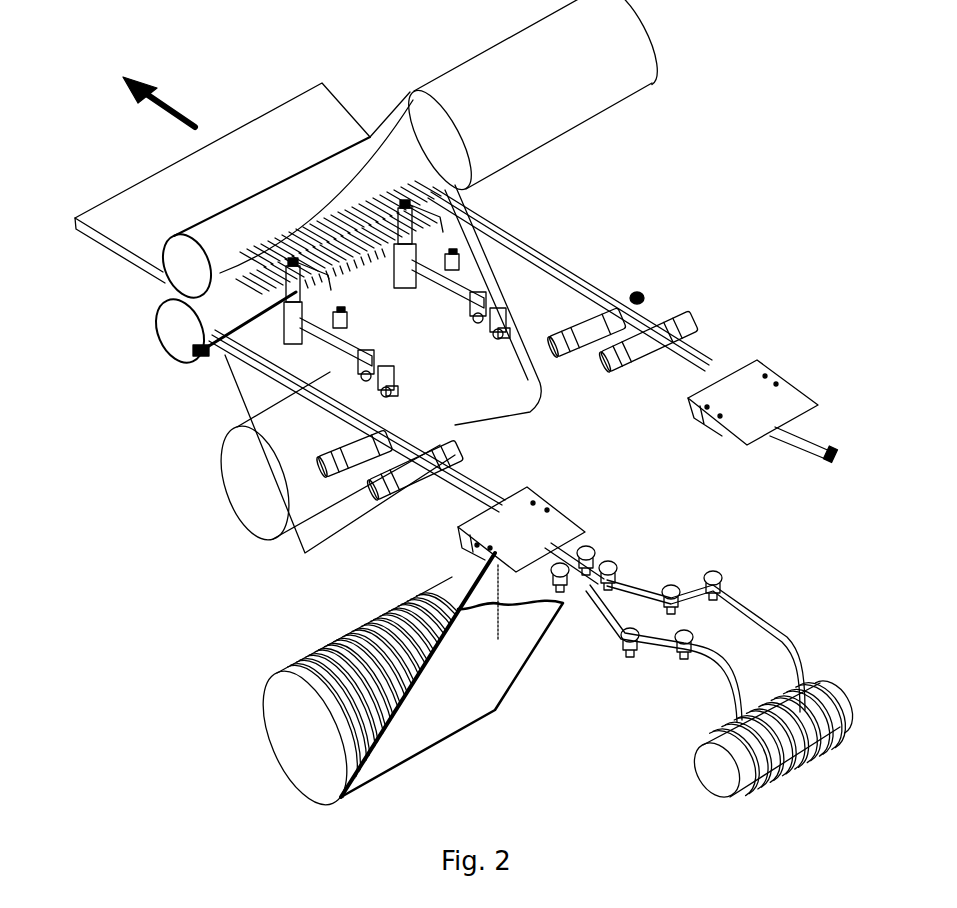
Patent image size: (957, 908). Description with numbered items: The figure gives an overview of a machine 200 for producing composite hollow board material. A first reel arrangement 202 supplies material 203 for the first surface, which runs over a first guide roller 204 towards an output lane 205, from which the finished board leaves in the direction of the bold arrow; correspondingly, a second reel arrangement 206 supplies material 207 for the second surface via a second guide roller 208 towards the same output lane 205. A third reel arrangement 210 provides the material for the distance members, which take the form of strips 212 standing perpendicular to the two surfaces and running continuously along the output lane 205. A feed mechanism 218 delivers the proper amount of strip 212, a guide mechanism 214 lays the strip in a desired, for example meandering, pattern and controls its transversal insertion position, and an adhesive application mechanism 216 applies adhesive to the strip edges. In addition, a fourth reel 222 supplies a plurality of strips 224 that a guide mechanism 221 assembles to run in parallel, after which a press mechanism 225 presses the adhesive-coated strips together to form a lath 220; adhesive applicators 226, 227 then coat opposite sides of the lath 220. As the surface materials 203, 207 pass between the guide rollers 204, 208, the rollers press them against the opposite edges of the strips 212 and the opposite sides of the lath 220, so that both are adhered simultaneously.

The machine 200 is at (220, 607).
The first reel arrangement 202 is at (247, 497).
The material for the first surface 203 is at (257, 407).
The first guide roller 204 is at (182, 333).
The output lane 205 is at (143, 198).
The second reel arrangement 206 is at (423, 123).
The material for the second surface 207 is at (385, 162).
The second guide roller 208 is at (185, 266).
The third reel arrangement 210 is at (272, 715).
The strips 212 is at (473, 433).
The guide mechanism 214 is at (196, 353).
The adhesive application mechanism 216 is at (298, 301).
The feed mechanism 218 is at (402, 363).
The lath 220 is at (535, 240).
The guide mechanism 221 is at (706, 657).
The fourth reel 222 is at (712, 768).
The strips 224 is at (787, 643).
The press mechanism 225 is at (625, 556).
The adhesive applicator 226 is at (370, 442).
The adhesive applicator 227 is at (437, 458).